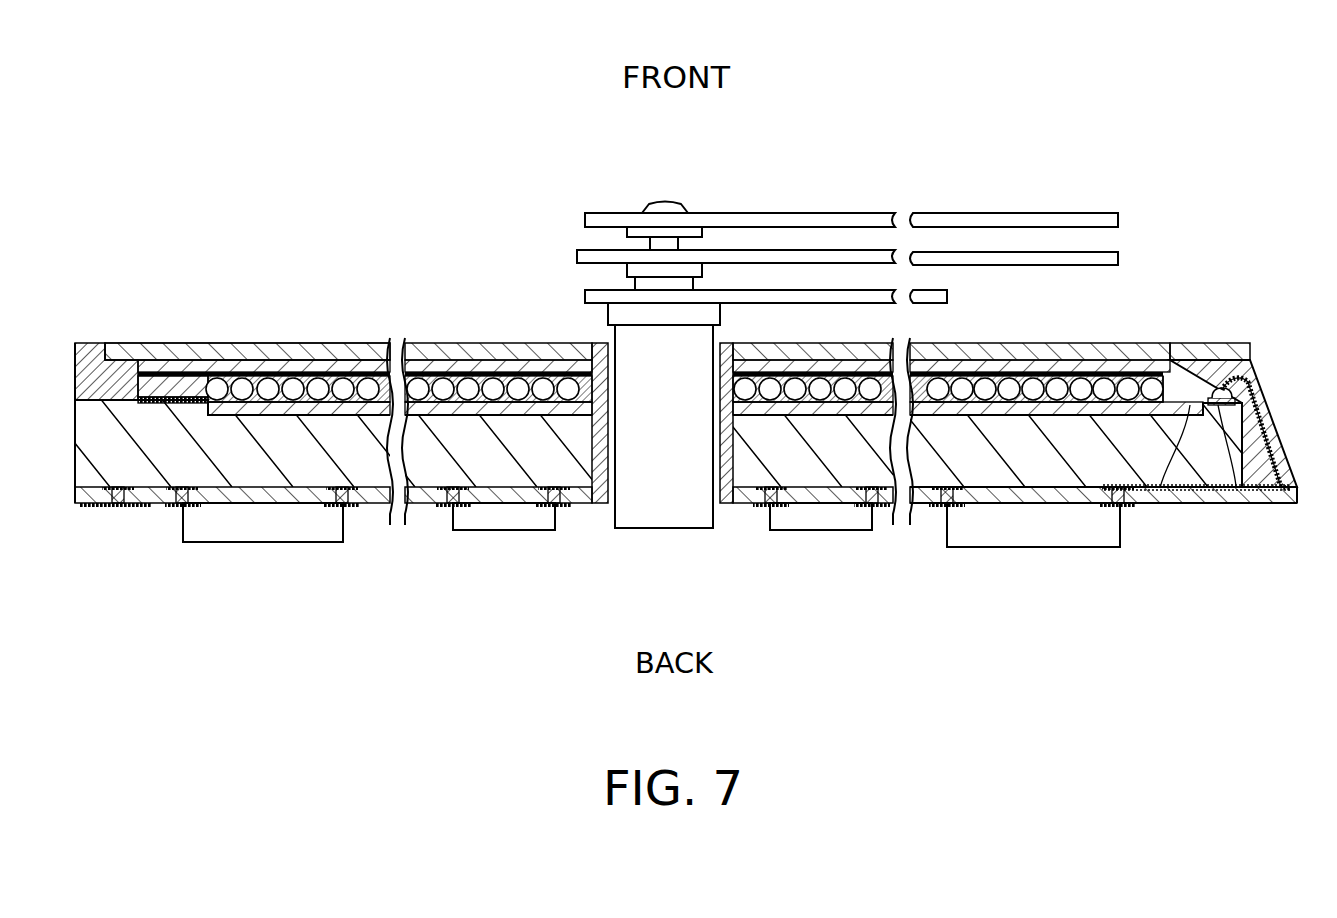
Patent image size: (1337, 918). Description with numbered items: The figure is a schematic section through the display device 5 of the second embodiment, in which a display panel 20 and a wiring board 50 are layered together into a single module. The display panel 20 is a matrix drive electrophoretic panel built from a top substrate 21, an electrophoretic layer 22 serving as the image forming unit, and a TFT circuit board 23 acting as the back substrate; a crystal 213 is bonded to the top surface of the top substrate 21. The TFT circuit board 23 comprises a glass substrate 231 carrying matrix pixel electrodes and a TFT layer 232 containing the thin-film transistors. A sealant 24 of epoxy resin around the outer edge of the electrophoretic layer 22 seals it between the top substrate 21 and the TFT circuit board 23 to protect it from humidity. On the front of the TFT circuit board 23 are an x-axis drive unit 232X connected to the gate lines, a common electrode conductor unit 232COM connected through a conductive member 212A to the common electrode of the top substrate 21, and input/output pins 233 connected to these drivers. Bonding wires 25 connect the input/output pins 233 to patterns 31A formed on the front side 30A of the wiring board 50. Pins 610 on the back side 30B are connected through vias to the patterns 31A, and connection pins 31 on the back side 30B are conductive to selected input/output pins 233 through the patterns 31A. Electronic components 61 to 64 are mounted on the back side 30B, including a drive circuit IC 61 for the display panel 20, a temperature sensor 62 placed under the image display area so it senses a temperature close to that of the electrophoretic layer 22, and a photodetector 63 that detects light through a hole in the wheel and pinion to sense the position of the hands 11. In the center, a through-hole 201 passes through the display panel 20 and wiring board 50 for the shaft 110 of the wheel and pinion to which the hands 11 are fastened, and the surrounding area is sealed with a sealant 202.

The display device 5 is at (1140, 311).
The hands 11 is at (847, 296).
The shaft 110 is at (616, 336).
The display panel 20 is at (66, 343).
The top substrate 21 is at (323, 343).
The conductive member 212A is at (184, 362).
The crystal 213 is at (1055, 343).
The electrophoretic layer 22 is at (357, 343).
The TFT circuit board 23 is at (530, 228).
The glass substrate 231 is at (440, 418).
The TFT layer 232 is at (471, 402).
The common electrode conductor unit 232COM is at (154, 405).
The x-axis drive unit 232X is at (1160, 496).
The input/output pins 233 is at (1238, 494).
The sealant 24 is at (100, 343).
The bonding wires 25 is at (1255, 375).
The front side of wiring board 30A is at (1068, 487).
The back side of wiring board 30B is at (1203, 506).
The connection pins 31 is at (97, 506).
The patterns 31A is at (1262, 455).
The wiring board 50 is at (72, 492).
The drive circuit IC 61 is at (1050, 547).
The temperature sensor 62 is at (820, 530).
The photodetector 63 is at (500, 530).
The electronic component 64 is at (262, 542).
The pins 610 is at (943, 508).
The through-hole 201 is at (700, 490).
The sealant 202 is at (599, 505).